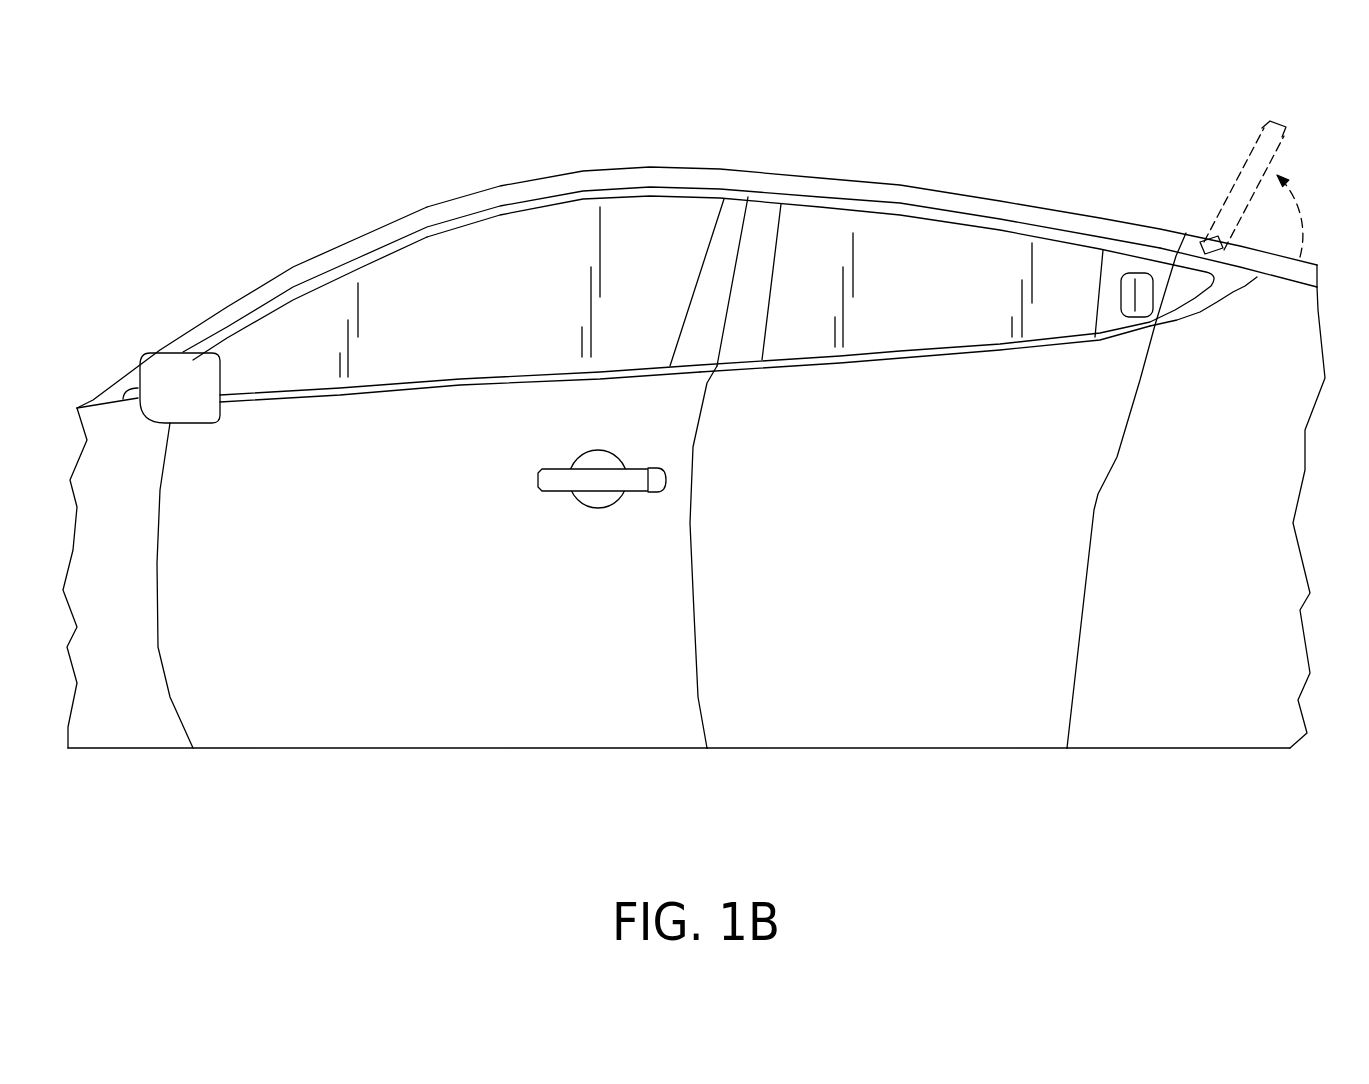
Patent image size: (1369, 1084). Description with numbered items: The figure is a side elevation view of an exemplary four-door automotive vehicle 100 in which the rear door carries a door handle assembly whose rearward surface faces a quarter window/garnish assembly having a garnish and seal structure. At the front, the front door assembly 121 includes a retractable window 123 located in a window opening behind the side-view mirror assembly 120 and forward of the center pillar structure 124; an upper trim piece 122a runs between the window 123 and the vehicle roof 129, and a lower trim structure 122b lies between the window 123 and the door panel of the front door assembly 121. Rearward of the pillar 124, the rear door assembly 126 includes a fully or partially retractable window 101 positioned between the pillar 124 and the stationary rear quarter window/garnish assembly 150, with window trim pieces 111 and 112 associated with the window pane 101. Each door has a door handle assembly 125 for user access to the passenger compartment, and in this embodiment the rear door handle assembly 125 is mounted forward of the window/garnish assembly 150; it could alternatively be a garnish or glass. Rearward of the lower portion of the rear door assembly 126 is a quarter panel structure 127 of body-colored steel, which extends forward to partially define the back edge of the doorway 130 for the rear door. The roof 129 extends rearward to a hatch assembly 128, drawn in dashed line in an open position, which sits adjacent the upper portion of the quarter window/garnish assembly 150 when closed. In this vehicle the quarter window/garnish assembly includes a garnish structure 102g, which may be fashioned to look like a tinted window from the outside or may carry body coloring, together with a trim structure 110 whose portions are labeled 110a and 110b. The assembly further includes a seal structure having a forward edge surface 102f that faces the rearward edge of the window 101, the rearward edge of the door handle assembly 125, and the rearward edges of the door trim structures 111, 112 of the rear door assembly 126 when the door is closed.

The vehicle 100 is at (103, 182).
The window 101 is at (717, 275).
The forward edge surface 102f is at (1102, 353).
The garnish structure 102g is at (1243, 319).
The trim structure 110 is at (1282, 292).
The upper portion of rear trim 110a is at (1223, 242).
The lower portion of rear trim 110b is at (1211, 333).
The window trim piece 111 is at (925, 362).
The window trim piece 112 is at (671, 245).
The side-view mirror assembly 120 is at (148, 380).
The front door assembly 121 is at (385, 598).
The upper trim piece 122a is at (312, 275).
The lower trim structure 122b is at (460, 398).
The retractable window 123 is at (252, 307).
The center pillar structure 124 is at (706, 281).
The door handle assembly 125 is at (818, 379).
The rear door assembly 126 is at (878, 577).
The quarter panel structure 127 is at (1164, 767).
The hatch assembly 128 is at (1277, 192).
The vehicle roof 129 is at (872, 202).
The doorway 130 is at (1132, 490).
The quarter window/garnish assembly 150 is at (1265, 517).